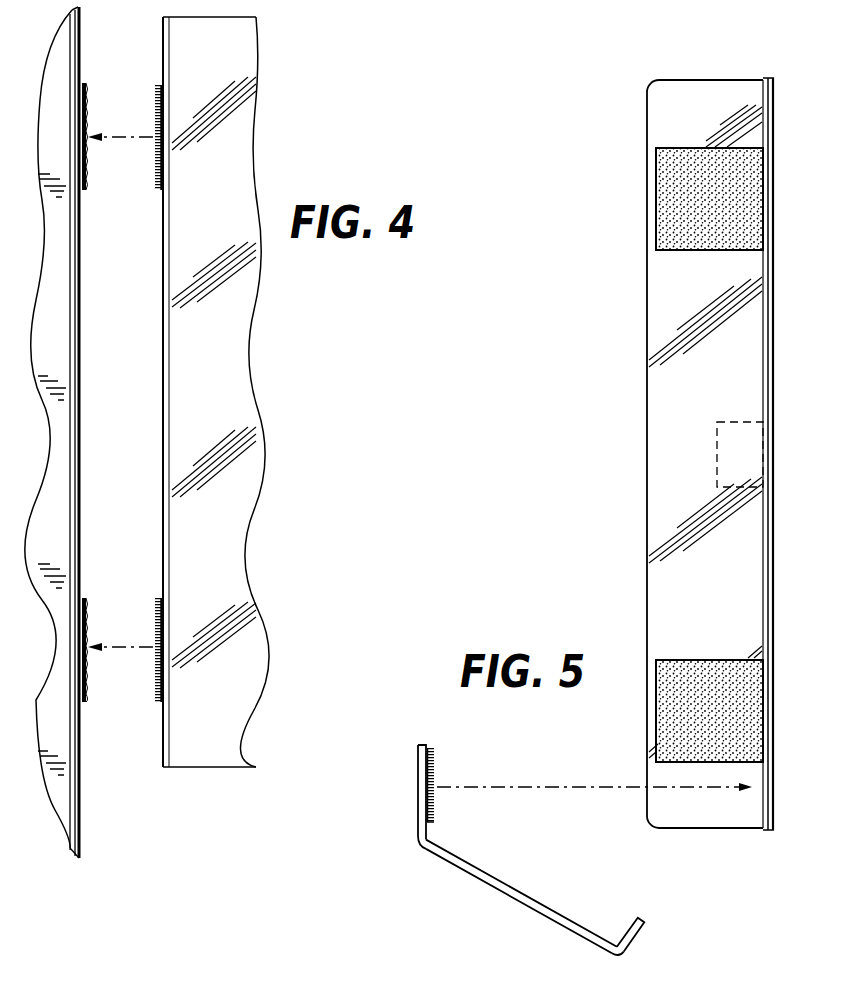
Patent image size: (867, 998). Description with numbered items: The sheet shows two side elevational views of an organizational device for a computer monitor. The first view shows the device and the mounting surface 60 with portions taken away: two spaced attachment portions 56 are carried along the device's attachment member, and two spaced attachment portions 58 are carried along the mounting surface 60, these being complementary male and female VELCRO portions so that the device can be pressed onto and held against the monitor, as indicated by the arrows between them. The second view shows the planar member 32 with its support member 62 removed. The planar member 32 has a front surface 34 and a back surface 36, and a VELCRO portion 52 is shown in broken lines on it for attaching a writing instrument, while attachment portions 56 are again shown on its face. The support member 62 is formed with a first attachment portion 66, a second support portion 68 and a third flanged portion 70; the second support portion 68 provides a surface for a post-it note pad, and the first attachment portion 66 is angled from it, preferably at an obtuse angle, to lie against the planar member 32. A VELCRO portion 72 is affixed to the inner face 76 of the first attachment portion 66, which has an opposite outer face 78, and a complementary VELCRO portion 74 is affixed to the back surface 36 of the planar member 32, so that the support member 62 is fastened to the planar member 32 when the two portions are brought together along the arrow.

In FIG. 5, the planar member 32 is at (713, 461).
In FIG. 5, the front surface 34 is at (776, 783).
In FIG. 5, the back surface 36 is at (761, 818).
In FIG. 5, the male VELCRO portion 52 is at (735, 420).
In FIG. 4, the attachment portion 56 is at (157, 118).
In FIG. 5, the attachment portion 56 is at (672, 197).
In FIG. 4, the attachment portion 58 is at (86, 160).
In FIG. 4, the mounting surface 60 is at (80, 808).
In FIG. 5, the support member 62 is at (531, 854).
In FIG. 5, the first attachment portion 66 is at (419, 789).
In FIG. 5, the second support portion 68 is at (518, 893).
In FIG. 5, the third flanged portion 70 is at (636, 934).
In FIG. 5, the VELCRO portion 72 is at (437, 768).
In FIG. 5, the VELCRO portion 74 is at (763, 798).
In FIG. 5, the inner face 76 is at (431, 830).
In FIG. 5, the outer face 78 is at (420, 830).